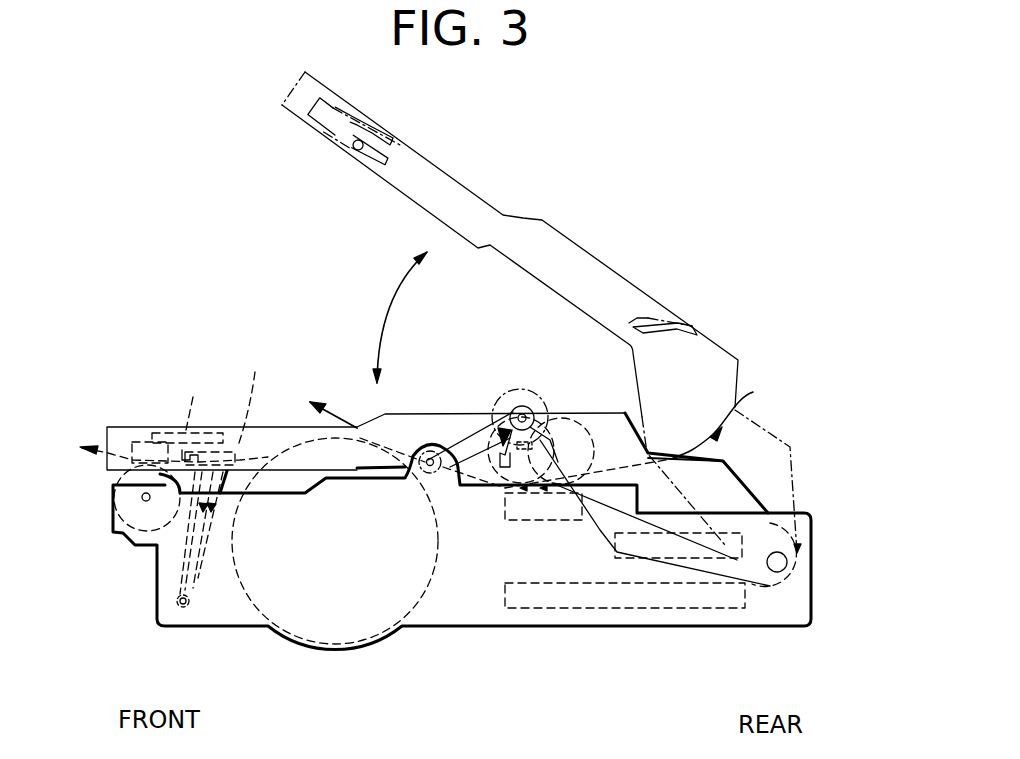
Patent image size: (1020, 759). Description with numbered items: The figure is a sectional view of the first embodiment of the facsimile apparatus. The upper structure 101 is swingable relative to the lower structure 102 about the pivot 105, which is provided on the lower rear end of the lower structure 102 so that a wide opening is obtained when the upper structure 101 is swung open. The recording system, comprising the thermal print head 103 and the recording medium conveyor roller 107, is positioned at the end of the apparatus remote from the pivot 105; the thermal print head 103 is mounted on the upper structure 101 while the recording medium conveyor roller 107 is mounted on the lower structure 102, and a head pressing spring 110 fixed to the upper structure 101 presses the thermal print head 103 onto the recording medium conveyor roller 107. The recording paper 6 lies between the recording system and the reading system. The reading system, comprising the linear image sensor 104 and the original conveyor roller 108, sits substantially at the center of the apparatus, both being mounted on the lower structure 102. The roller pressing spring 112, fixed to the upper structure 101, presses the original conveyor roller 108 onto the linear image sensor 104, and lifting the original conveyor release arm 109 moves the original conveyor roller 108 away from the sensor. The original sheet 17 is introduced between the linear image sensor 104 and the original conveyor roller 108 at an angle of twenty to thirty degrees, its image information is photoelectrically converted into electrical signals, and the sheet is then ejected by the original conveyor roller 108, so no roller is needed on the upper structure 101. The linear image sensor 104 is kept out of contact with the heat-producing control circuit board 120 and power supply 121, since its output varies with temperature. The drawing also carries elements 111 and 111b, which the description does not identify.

The upper structure 101 is at (553, 250).
The lower structure 102 is at (457, 622).
The thermal print head 103 is at (140, 440).
The linear image sensor 104 is at (532, 521).
The pivot 105 is at (777, 573).
The recording medium conveyor roller 107 is at (147, 528).
The original conveyor roller 108 is at (580, 455).
The original conveyor release arm 109 is at (472, 433).
The head pressing spring 110 is at (265, 390).
The tape 111 is at (190, 594).
The tape portion 111b is at (210, 398).
The roller pressing spring 112 is at (562, 432).
The control circuit board 120 is at (618, 559).
The power supply 121 is at (690, 560).
The original sheet 17 is at (341, 424).
The recording paper 6 is at (326, 650).